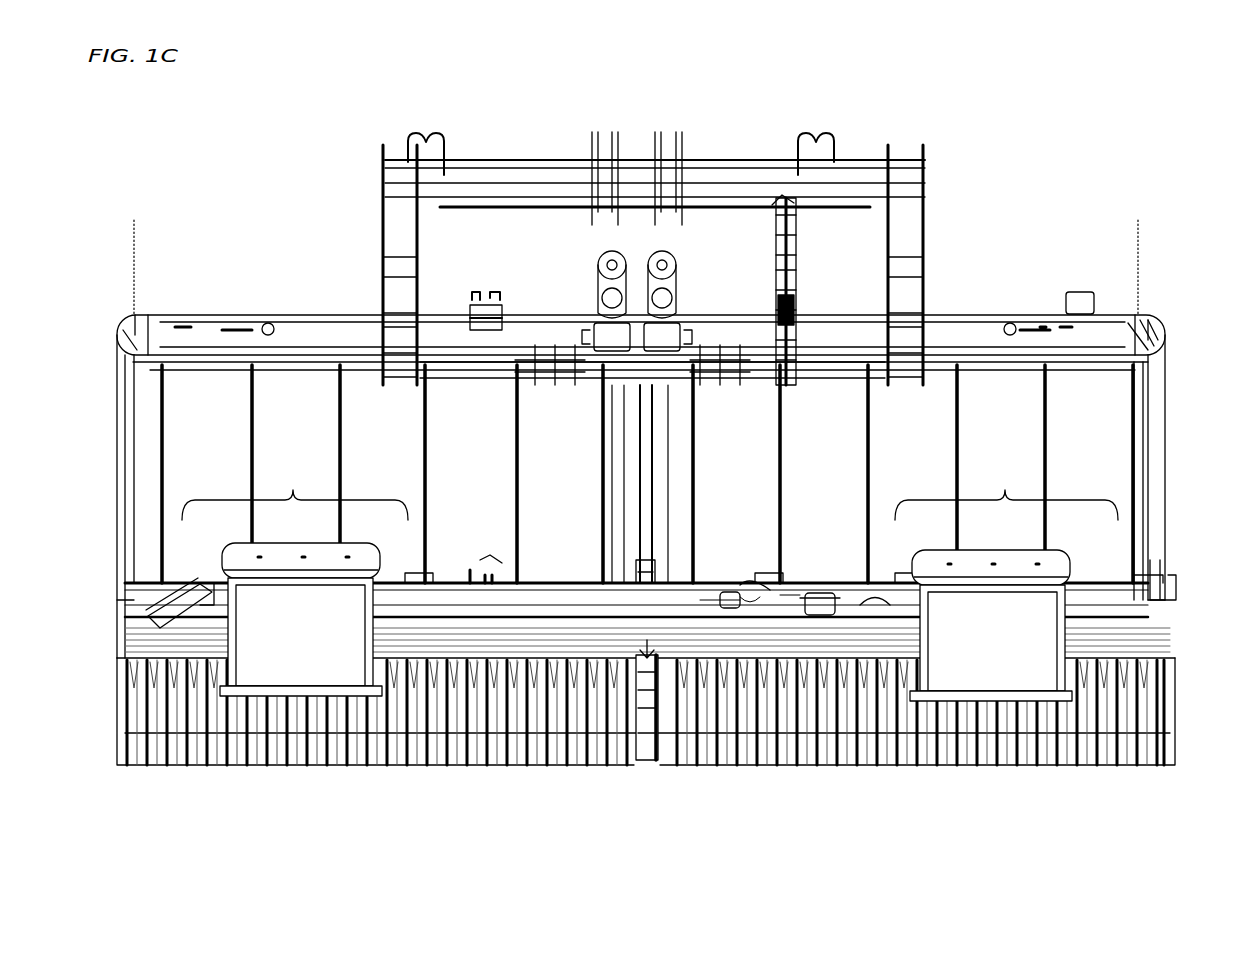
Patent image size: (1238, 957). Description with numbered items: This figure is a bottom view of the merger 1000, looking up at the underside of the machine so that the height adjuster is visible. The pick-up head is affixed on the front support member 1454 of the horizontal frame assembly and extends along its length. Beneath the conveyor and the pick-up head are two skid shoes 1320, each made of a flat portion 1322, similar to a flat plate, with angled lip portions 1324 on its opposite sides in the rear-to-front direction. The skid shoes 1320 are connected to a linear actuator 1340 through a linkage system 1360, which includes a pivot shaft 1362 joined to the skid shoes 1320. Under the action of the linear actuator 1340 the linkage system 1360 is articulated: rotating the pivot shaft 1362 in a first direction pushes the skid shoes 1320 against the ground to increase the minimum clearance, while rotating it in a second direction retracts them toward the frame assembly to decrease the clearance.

The merger 1000 is at (183, 152).
The skid shoe 1320 is at (293, 490).
The flat portion 1322 is at (646, 617).
The angled lip portions 1324 is at (355, 702).
The linear actuator 1340 is at (778, 248).
The linkage system 1360 is at (630, 760).
The pivot shaft 1362 is at (524, 768).
The front support member 1454 is at (1170, 590).